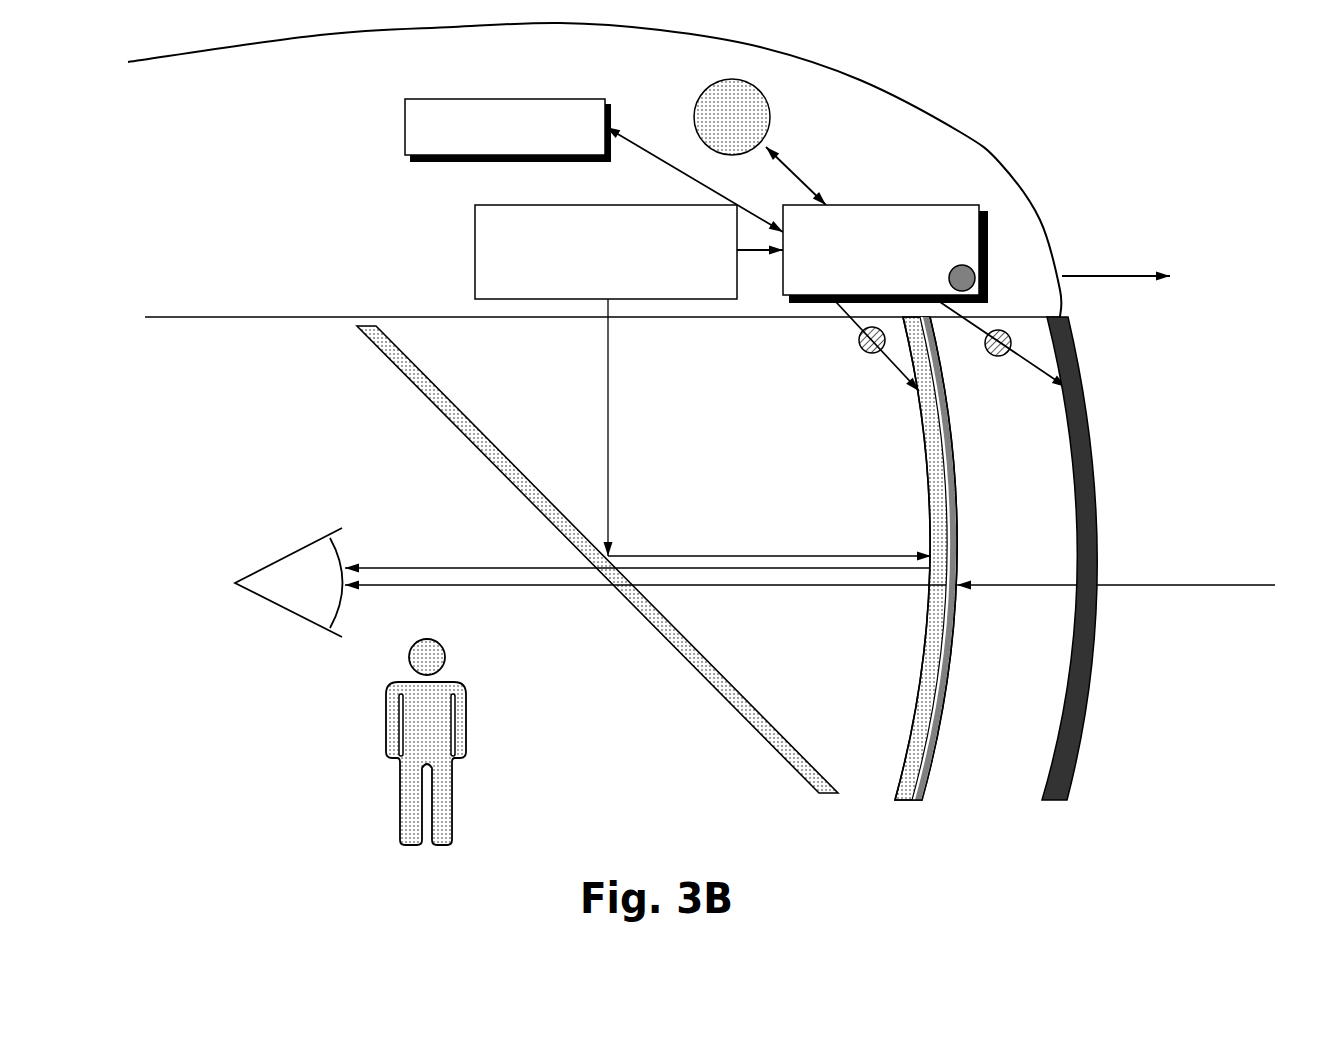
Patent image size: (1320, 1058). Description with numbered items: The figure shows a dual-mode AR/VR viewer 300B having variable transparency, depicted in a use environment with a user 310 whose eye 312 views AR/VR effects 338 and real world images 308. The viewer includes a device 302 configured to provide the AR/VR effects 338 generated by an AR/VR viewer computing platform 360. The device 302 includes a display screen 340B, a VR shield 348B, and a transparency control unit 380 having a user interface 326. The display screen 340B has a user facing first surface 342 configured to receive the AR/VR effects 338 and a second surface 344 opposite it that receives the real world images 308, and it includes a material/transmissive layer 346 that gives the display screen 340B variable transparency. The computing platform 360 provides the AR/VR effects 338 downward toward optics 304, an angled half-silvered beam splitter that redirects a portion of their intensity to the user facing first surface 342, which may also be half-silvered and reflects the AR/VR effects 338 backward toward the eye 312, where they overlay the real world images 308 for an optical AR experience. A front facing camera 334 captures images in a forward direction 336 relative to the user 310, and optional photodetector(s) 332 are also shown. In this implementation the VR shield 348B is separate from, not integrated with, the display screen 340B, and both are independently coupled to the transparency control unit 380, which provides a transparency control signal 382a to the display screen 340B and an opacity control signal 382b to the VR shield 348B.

The dual-mode AR/VR viewer 300B is at (1065, 178).
The device 302 is at (594, 170).
The optics 304 is at (478, 460).
The real world images 308 is at (1237, 584).
The user 310 is at (405, 789).
The eye 312 is at (266, 601).
The user interface 326 is at (948, 280).
The photodetector(s) 332 is at (405, 125).
The front facing camera 334 is at (760, 142).
The forward direction 336 is at (1109, 276).
The AR/VR effects 338 is at (612, 398).
The display screen 340B is at (933, 558).
The user facing first surface 342 is at (925, 620).
The second surface 344 is at (956, 612).
The material/transmissive layer 346 is at (908, 500).
The VR shield 348B is at (1094, 437).
The AR/VR viewer computing platform 360 is at (475, 258).
The transparency control unit 380 is at (910, 205).
The transparency control signal 382a is at (863, 352).
The opacity control signal 382b is at (996, 358).